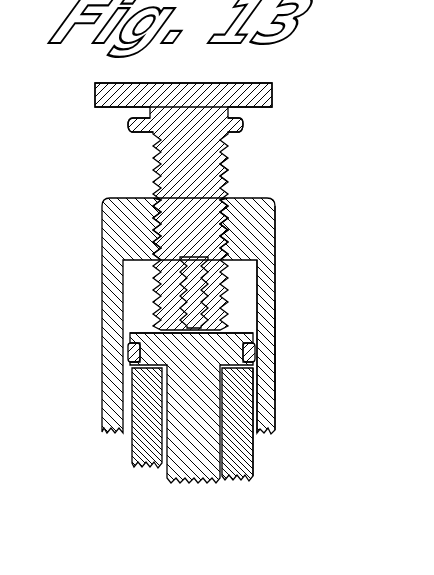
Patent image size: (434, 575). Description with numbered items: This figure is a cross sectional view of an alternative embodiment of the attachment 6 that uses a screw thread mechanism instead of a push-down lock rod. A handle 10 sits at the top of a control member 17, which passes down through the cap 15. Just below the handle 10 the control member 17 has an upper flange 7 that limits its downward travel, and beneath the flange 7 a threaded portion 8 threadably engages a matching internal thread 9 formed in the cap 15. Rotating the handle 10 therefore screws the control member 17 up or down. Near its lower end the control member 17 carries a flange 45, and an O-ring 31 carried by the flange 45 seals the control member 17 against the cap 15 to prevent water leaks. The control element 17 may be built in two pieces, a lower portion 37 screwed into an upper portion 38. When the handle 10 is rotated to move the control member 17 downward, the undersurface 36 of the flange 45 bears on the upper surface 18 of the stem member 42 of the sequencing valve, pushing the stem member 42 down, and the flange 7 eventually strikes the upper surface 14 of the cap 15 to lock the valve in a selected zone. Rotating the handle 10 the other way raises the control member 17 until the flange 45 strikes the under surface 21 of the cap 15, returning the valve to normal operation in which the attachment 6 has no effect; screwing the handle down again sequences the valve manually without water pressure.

The attachment 6 is at (283, 345).
The upper flange 7 is at (244, 125).
The threaded portion 8 is at (226, 172).
The internal thread 9 is at (231, 229).
The handle 10 is at (255, 84).
The upper surface 14 is at (252, 199).
The cap 15 is at (276, 251).
The control member 17 is at (172, 470).
The upper surface 18 is at (254, 355).
The under surface 21 is at (241, 263).
The O-ring 31 is at (130, 351).
The undersurface 36 is at (134, 388).
The lower portion 37 is at (232, 410).
The upper portion 38 is at (155, 165).
The stem member 42 is at (256, 452).
The flange 45 is at (148, 334).